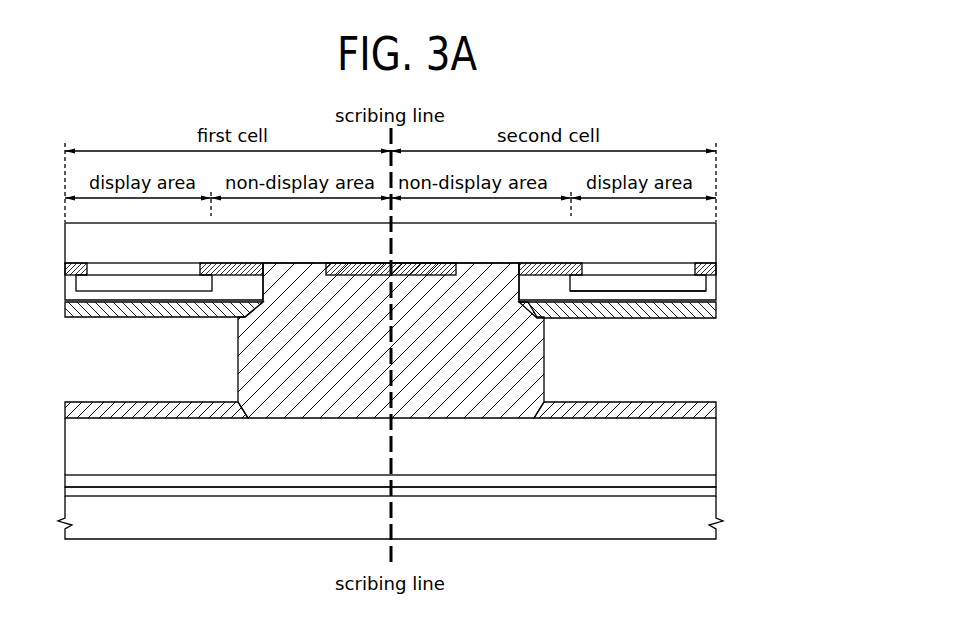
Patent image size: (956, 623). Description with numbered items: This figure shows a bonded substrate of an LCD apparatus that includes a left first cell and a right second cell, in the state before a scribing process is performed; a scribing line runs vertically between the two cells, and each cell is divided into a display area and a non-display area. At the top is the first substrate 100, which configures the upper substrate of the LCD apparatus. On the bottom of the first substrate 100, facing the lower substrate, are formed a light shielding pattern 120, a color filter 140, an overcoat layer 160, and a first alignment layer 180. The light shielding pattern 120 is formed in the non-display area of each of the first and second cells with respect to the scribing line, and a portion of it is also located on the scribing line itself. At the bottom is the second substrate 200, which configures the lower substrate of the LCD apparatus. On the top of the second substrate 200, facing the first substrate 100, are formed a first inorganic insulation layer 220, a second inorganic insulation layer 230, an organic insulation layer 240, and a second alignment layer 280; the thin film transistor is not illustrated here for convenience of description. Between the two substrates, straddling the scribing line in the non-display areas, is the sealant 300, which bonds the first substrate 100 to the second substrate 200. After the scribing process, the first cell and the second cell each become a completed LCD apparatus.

The first substrate 100 is at (710, 245).
The light shielding pattern 120 is at (716, 270).
The color filter 140 is at (657, 282).
The overcoat layer 160 is at (710, 292).
The first alignment layer 180 is at (705, 310).
The second substrate 200 is at (712, 512).
The first inorganic insulation layer 220 is at (712, 493).
The second inorganic insulation layer 230 is at (712, 478).
The organic insulation layer 240 is at (712, 445).
The second alignment layer 280 is at (700, 410).
The sealant 300 is at (528, 359).